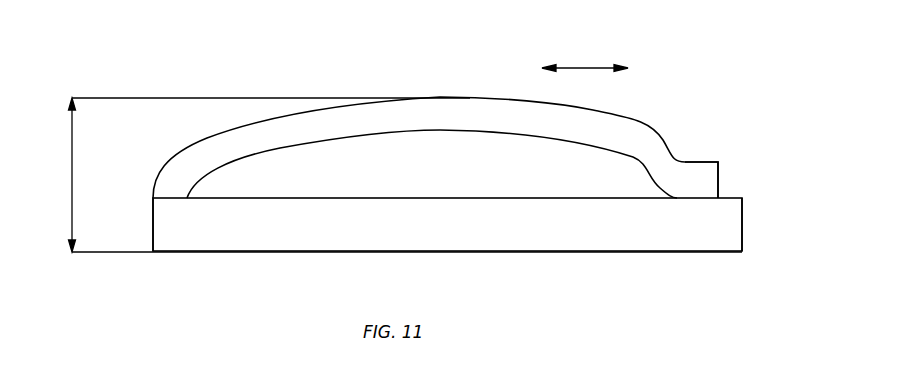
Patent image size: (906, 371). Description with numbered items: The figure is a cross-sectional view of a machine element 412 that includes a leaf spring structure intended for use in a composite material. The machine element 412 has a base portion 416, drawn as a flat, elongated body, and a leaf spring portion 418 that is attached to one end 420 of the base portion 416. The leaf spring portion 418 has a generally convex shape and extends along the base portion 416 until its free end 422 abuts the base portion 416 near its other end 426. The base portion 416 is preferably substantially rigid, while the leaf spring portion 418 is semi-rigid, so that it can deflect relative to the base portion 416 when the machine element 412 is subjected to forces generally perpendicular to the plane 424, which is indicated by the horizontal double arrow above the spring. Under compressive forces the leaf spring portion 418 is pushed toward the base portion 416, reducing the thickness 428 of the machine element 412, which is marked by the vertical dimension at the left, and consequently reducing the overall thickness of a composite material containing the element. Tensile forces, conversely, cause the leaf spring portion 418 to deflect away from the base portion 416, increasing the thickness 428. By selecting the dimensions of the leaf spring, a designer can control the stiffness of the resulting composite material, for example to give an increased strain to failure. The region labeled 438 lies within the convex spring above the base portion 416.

The machine element 412 is at (717, 88).
The base portion 416 is at (665, 252).
The leaf spring portion 418 is at (205, 140).
The one end 420 is at (152, 233).
The free end 422 is at (718, 178).
The plane 424 is at (583, 67).
The other end 426 is at (742, 223).
The thickness 428 is at (397, 175).
The inner layer 438 is at (465, 177).